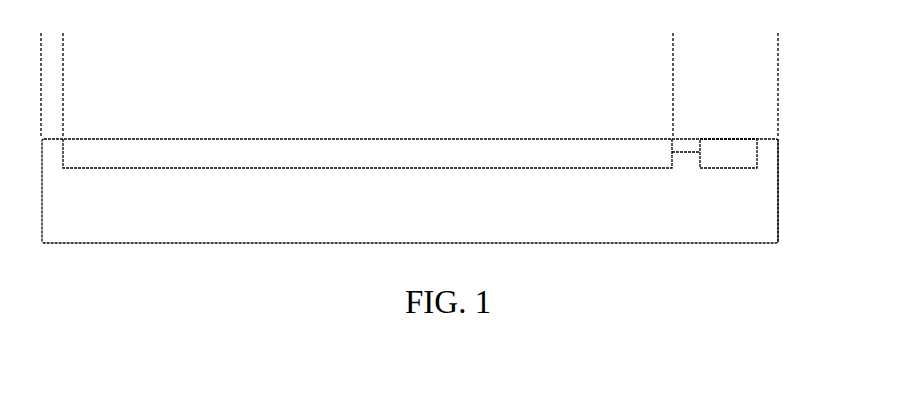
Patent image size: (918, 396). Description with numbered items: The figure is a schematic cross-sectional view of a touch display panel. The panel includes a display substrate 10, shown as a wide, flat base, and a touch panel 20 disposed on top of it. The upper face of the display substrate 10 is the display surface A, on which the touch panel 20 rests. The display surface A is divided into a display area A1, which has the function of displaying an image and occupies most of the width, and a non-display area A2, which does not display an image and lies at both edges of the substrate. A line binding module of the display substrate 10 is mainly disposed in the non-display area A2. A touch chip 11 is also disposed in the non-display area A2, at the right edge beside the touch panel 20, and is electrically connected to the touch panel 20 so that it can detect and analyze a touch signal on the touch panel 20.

The display substrate 10 is at (773, 198).
The touch panel 20 is at (390, 148).
The touch chip 11 is at (732, 148).
The display surface A is at (764, 135).
The display area A1 is at (63, 43).
The non-display area A2 is at (778, 43).